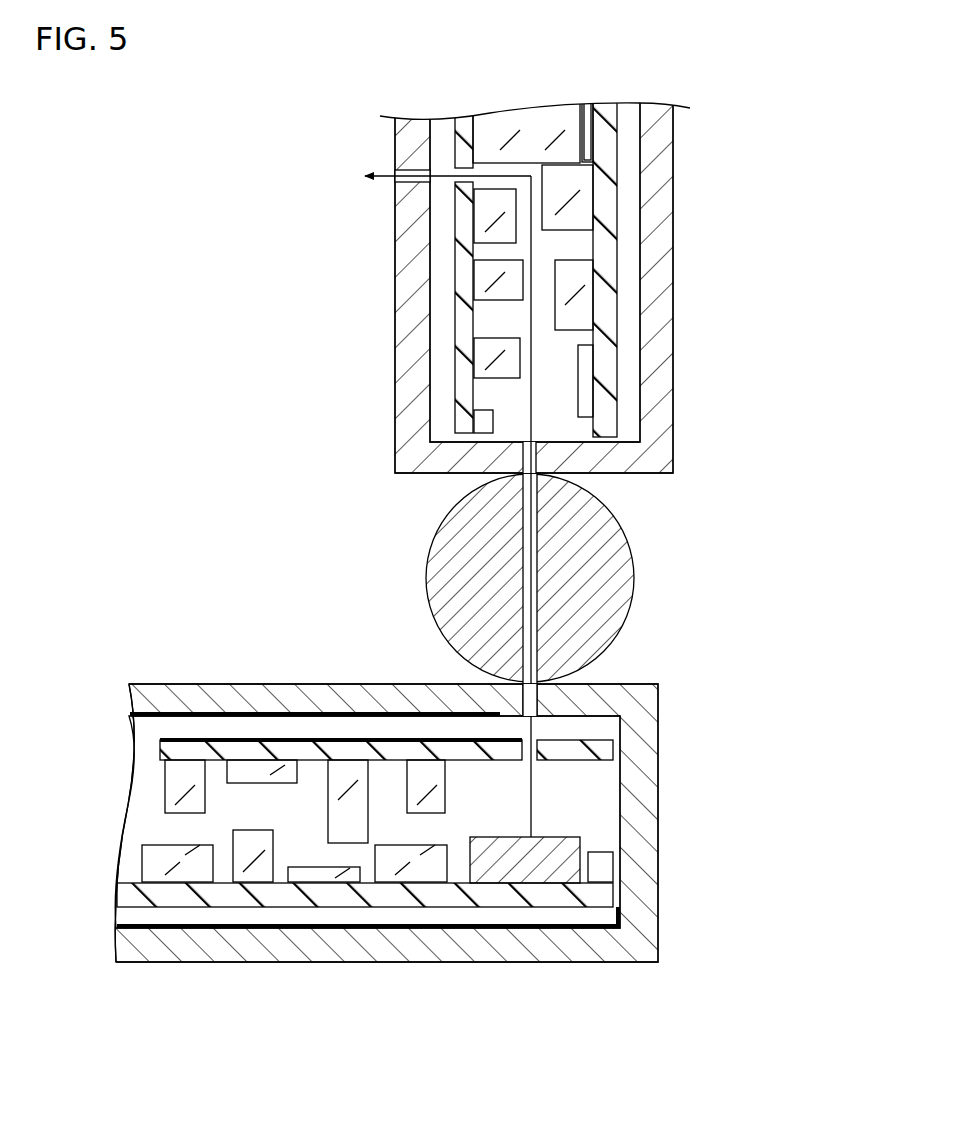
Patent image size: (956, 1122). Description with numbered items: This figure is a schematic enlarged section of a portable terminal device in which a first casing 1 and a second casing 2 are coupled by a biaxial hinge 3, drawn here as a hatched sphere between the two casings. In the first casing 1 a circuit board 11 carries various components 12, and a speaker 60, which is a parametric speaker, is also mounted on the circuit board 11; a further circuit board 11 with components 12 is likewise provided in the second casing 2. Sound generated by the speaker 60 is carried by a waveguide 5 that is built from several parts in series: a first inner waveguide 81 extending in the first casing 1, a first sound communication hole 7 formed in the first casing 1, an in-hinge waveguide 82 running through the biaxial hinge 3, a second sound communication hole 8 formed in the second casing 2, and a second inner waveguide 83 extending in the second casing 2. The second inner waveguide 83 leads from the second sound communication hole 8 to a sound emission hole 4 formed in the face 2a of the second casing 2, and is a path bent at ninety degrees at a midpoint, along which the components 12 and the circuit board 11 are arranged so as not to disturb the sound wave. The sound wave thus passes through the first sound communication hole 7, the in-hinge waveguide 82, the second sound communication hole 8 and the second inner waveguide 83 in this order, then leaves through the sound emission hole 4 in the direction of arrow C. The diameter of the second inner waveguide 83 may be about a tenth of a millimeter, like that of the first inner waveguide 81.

The first casing 1 is at (658, 940).
The second casing 2 is at (675, 180).
The face 2a is at (395, 420).
The biaxial hinge 3 is at (628, 553).
The sound emission hole 4 is at (415, 187).
The waveguide 5 is at (515, 580).
The first sound communication hole 7 is at (515, 703).
The second sound communication hole 8 is at (540, 457).
The circuit board 11 is at (618, 298).
The components 12 is at (556, 258).
The speaker 60 is at (560, 837).
The first inner waveguide 81 is at (560, 780).
The in-hinge waveguide 82 is at (543, 620).
The second inner waveguide 83 is at (553, 372).
The arrow C is at (440, 158).